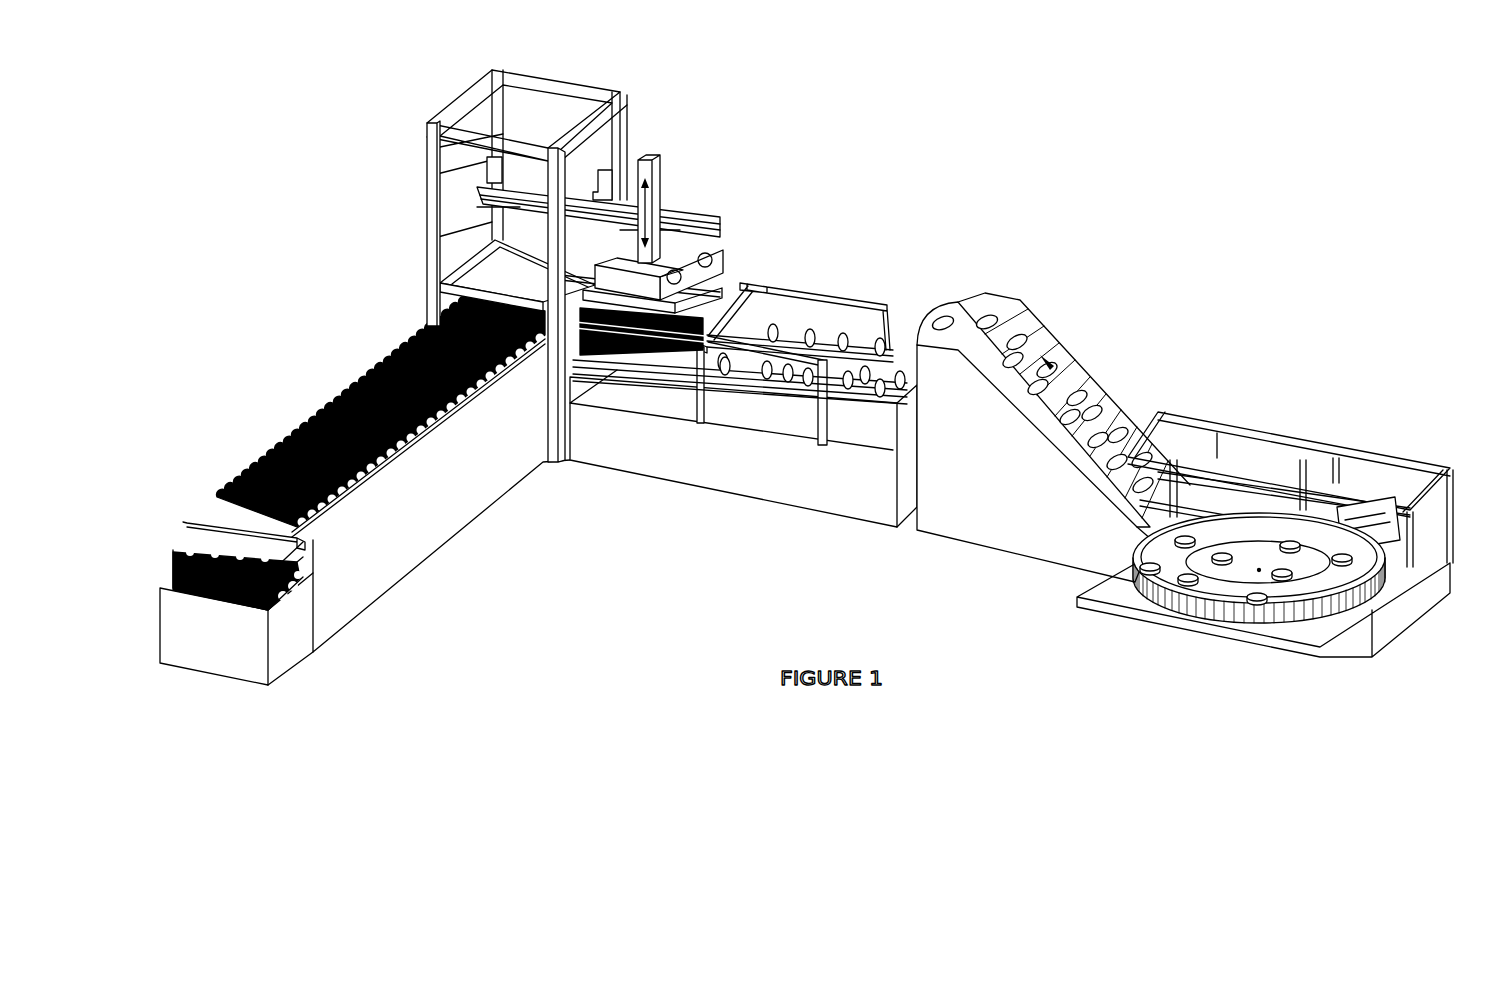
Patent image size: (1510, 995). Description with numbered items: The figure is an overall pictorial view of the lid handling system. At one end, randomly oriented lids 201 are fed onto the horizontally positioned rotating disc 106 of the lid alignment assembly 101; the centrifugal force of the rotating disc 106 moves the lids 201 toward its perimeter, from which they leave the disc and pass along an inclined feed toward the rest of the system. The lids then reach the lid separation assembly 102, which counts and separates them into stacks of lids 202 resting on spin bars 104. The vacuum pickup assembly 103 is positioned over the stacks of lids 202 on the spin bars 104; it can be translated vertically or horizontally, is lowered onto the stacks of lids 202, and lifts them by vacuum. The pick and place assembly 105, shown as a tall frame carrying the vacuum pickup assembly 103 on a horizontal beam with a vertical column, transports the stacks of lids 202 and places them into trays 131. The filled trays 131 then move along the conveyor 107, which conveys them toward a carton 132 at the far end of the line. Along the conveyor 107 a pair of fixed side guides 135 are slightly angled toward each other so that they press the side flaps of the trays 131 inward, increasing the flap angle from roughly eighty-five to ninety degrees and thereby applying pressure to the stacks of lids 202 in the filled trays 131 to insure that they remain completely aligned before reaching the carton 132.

The lid alignment assembly 101 is at (1358, 535).
The lid separation assembly 102 is at (713, 303).
The vacuum pickup assembly 103 is at (680, 260).
The spin bars 104 is at (747, 385).
The pick and place assembly 105 is at (650, 153).
The rotating disc 106 is at (1250, 560).
The conveyor 107 is at (210, 512).
The trays 131 is at (527, 288).
The carton 132 is at (290, 553).
The side guides 135 is at (297, 548).
The lids 201 is at (1218, 550).
The stacks of lids 202 is at (622, 367).